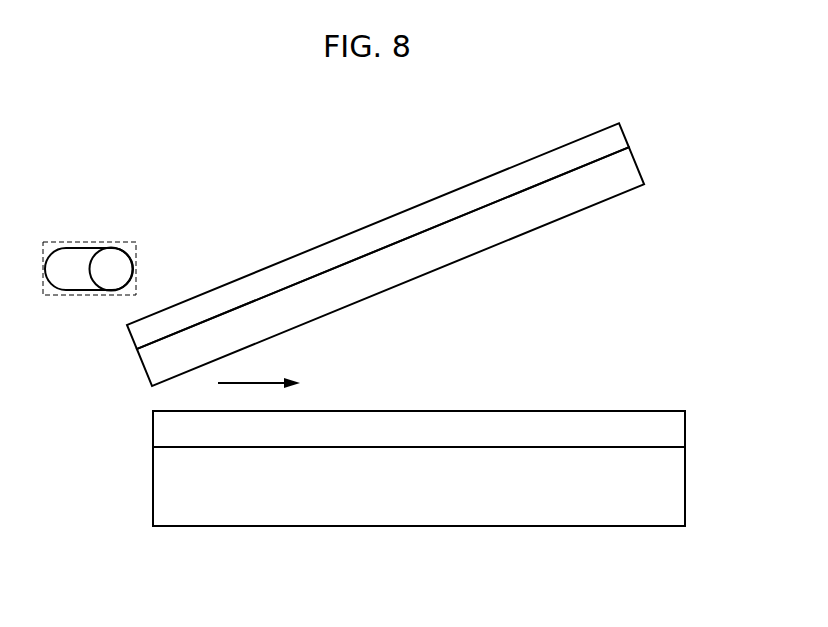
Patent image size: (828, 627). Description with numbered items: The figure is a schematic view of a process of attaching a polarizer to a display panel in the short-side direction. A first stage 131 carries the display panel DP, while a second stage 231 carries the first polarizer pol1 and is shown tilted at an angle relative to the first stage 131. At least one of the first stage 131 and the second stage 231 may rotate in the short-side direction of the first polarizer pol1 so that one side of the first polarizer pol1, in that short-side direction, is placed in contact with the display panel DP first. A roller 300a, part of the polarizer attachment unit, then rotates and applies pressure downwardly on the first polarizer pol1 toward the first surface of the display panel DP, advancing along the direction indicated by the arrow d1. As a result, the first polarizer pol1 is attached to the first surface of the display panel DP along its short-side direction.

The second stage 231 is at (533, 167).
The first polarizer pol1 is at (575, 197).
The roller 300a is at (92, 240).
The first direction d1 is at (259, 369).
The first stage 131 is at (584, 505).
The display panel DP is at (620, 420).